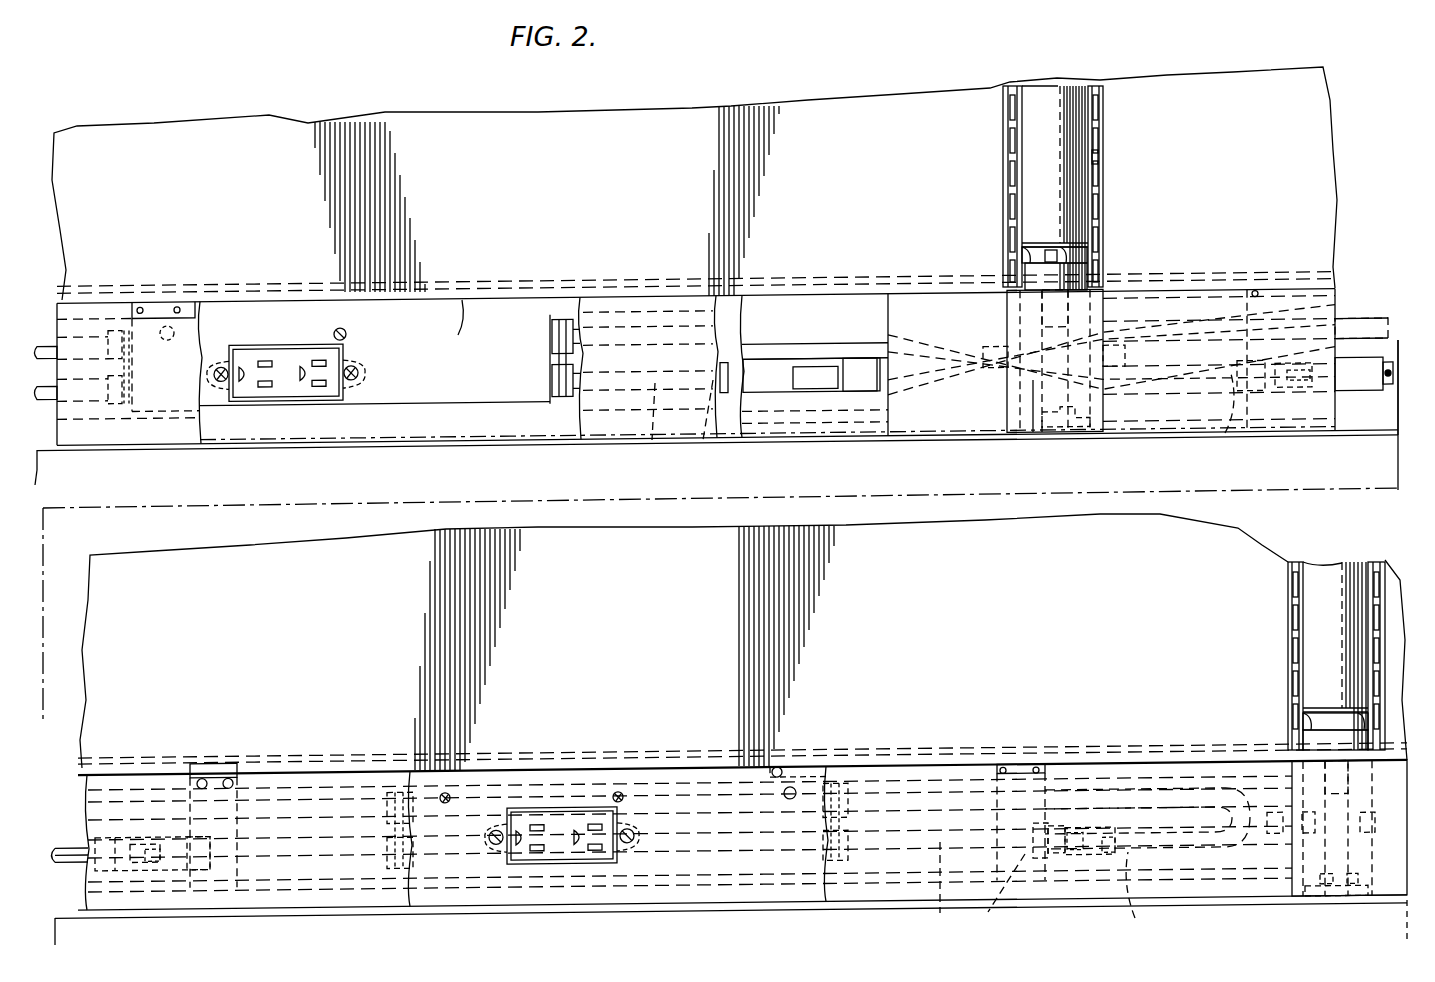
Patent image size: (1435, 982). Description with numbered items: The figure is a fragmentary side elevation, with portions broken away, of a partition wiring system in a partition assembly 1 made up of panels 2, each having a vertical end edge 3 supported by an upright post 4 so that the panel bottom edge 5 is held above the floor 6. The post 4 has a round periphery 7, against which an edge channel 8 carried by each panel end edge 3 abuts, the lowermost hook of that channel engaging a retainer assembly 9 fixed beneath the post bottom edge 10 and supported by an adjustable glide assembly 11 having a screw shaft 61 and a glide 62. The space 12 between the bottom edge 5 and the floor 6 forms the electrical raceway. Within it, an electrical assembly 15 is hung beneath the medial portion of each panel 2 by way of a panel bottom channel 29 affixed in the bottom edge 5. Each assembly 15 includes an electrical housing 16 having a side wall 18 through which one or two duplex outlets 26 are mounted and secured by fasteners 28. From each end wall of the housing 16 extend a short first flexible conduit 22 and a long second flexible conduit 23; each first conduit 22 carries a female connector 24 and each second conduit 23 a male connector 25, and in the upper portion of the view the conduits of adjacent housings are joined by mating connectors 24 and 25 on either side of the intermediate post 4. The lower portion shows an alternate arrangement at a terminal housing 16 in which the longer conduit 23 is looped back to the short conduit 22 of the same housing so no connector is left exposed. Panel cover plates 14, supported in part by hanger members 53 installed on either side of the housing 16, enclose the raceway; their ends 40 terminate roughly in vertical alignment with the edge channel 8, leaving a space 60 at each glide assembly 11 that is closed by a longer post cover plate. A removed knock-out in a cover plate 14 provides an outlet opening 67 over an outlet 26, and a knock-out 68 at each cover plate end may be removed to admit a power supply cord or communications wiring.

The partition assembly 1 is at (953, 58).
The panel 2 is at (466, 130).
The vertical end edge 3 is at (1092, 150).
The upright post 4 is at (1060, 80).
The bottom edge 5 is at (1170, 290).
The floor 6 is at (1392, 445).
The periphery 7 is at (1040, 104).
The edge channel 8 is at (1008, 82).
The retainer assembly 9 is at (1048, 283).
The post bottom edge 10 is at (1050, 243).
The adjustable glide assembly 11 is at (1072, 328).
The space 12 is at (810, 396).
The panel cover plate 14 is at (170, 354).
The electrical assembly 15 is at (473, 407).
The electrical housing 16 is at (384, 403).
The side wall 18 is at (462, 325).
The first flexible conduit 22 is at (57, 430).
The second flexible conduit 23 is at (825, 333).
The female connector 24 is at (805, 383).
The male connector 25 is at (860, 395).
The duplex outlet 26 is at (285, 358).
The fastener 28 is at (358, 375).
The panel bottom channel 29 is at (790, 300).
The end of panel cover plate 40 is at (1015, 314).
The hanger member 53 is at (215, 796).
The space 60 is at (1068, 430).
The glide assembly screw shaft 61 is at (1335, 848).
The glide 62 is at (1340, 900).
The outlet opening 67 is at (565, 815).
The knock-out 68 is at (1003, 372).